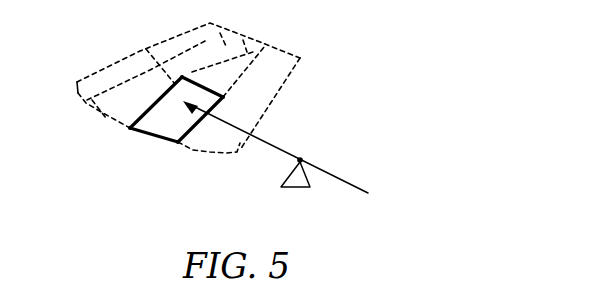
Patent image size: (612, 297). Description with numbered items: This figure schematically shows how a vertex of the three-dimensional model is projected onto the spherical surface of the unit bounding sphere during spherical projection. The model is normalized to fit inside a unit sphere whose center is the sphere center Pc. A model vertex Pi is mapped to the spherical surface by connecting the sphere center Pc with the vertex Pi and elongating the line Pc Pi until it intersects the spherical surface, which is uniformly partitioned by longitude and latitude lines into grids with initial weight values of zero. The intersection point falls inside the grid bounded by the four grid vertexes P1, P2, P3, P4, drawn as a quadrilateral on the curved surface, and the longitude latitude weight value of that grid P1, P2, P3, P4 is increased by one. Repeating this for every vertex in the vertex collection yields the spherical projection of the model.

The grid vertex P1 is at (119, 145).
The grid vertex P2 is at (169, 160).
The grid vertex P3 is at (186, 69).
The grid vertex P4 is at (266, 104).
The vertex of the three-dimensional model Pi is at (313, 164).
The sphere center Pc is at (291, 158).